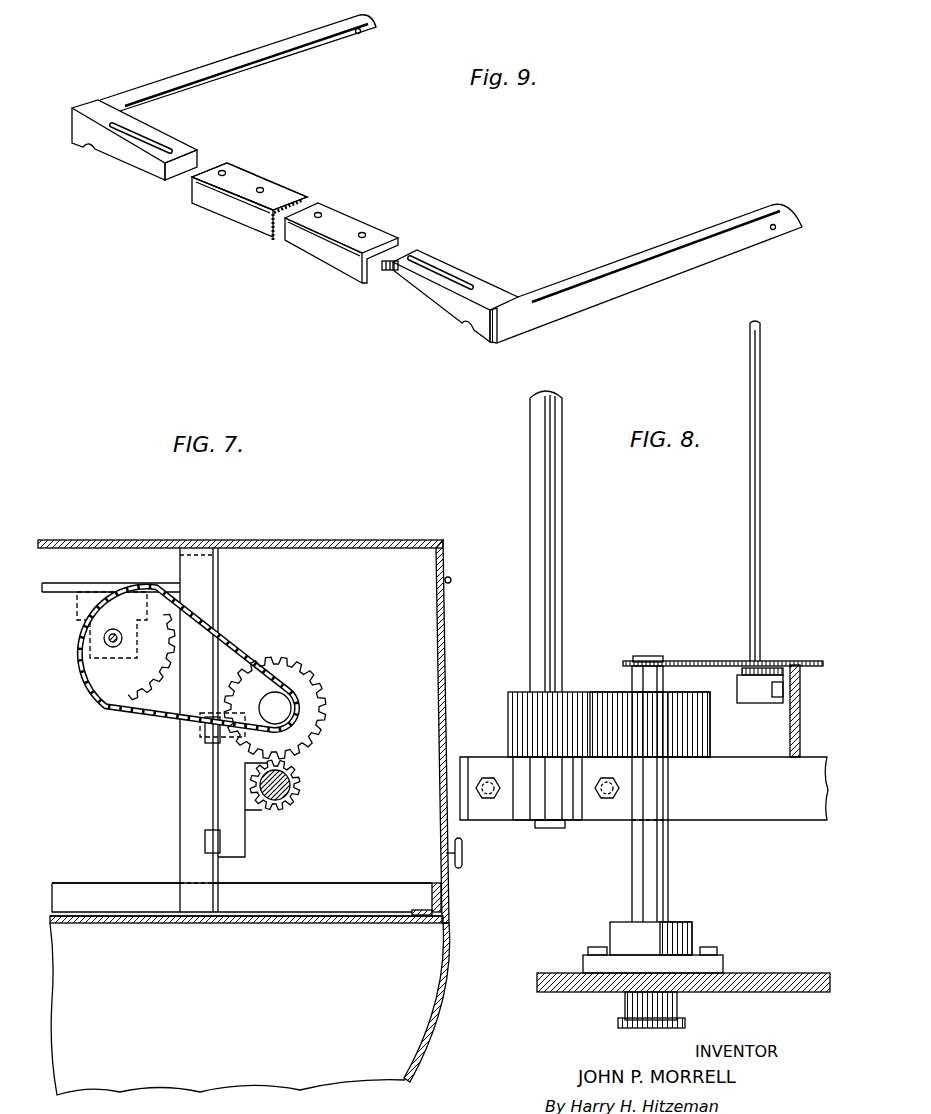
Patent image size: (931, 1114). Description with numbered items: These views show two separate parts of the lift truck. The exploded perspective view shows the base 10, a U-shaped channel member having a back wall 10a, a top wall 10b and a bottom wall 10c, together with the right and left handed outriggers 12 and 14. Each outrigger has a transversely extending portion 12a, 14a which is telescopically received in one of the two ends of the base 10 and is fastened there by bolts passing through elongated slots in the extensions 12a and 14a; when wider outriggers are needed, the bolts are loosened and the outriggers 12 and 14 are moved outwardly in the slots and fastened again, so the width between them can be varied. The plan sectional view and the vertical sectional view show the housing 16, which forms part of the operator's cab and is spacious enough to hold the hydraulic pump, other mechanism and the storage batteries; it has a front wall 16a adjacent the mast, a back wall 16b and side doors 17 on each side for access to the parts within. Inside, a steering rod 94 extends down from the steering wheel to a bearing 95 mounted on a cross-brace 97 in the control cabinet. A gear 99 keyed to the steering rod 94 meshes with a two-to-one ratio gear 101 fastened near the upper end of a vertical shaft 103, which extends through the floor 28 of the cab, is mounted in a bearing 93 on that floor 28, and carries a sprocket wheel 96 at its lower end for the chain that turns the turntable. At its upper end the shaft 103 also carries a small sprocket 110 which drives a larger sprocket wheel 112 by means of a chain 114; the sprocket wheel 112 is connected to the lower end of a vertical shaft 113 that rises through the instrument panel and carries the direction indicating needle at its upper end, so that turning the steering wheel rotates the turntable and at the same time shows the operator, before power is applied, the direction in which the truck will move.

In FIG. 9, the base 10 is at (306, 239).
In FIG. 9, the back wall 10a is at (210, 197).
In FIG. 9, the top wall 10b is at (277, 189).
In FIG. 9, the bottom wall 10c is at (382, 272).
In FIG. 9, the outrigger 12 is at (203, 84).
In FIG. 9, the transversely extending portion 12a is at (110, 152).
In FIG. 9, the outrigger 14 is at (647, 250).
In FIG. 9, the transversely extending portion 14a is at (487, 288).
In FIG. 7, the housing 16 is at (119, 870).
In FIG. 7, the front wall 16a is at (291, 541).
In FIG. 7, the back wall 16b is at (245, 923).
In FIG. 7, the side door 17 is at (445, 712).
In FIG. 7, the floor 28 is at (250, 1009).
In FIG. 8, the floor 28 is at (785, 965).
In FIG. 8, the bearing 93 is at (692, 935).
In FIG. 7, the steering rod 94 is at (278, 798).
In FIG. 8, the steering rod 94 is at (558, 547).
In FIG. 7, the bearing 95 is at (243, 857).
In FIG. 8, the bearing 95 is at (602, 814).
In FIG. 8, the sprocket wheel 96 is at (687, 1022).
In FIG. 7, the cross-brace 97 is at (180, 827).
In FIG. 8, the cross-brace 97 is at (733, 812).
In FIG. 7, the gear 99 is at (302, 790).
In FIG. 8, the gear 99 is at (518, 692).
In FIG. 7, the gear 101 is at (315, 722).
In FIG. 8, the gear 101 is at (703, 735).
In FIG. 8, the vertical shaft 103 is at (665, 897).
In FIG. 7, the sprocket 110 is at (278, 707).
In FIG. 8, the sprocket 110 is at (635, 657).
In FIG. 7, the sprocket wheel 112 is at (95, 687).
In FIG. 8, the sprocket wheel 112 is at (803, 662).
In FIG. 7, the driven shaft 113 is at (116, 636).
In FIG. 8, the driven shaft 113 is at (758, 560).
In FIG. 7, the chain 114 is at (237, 647).
In FIG. 8, the chain 114 is at (684, 662).